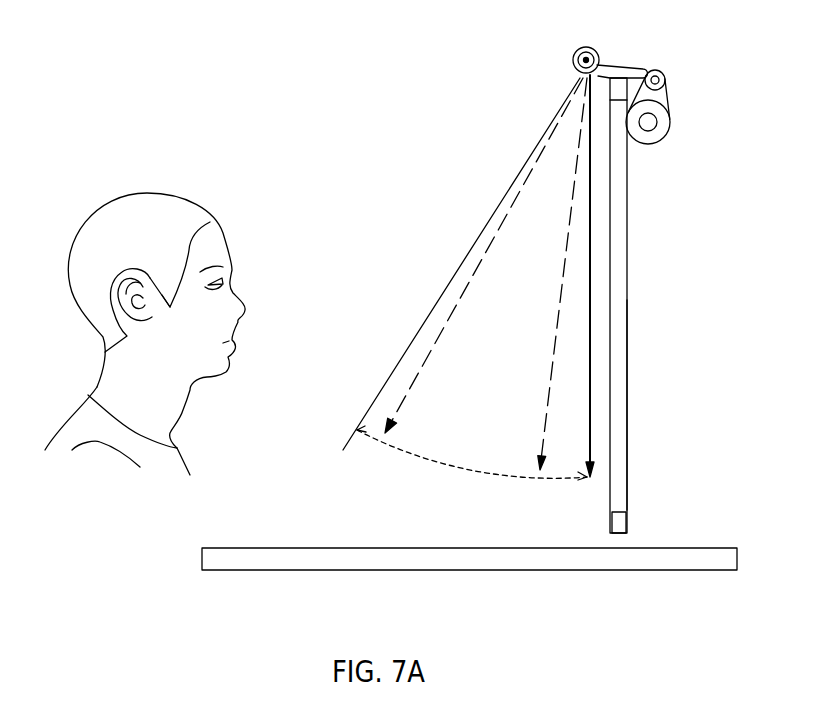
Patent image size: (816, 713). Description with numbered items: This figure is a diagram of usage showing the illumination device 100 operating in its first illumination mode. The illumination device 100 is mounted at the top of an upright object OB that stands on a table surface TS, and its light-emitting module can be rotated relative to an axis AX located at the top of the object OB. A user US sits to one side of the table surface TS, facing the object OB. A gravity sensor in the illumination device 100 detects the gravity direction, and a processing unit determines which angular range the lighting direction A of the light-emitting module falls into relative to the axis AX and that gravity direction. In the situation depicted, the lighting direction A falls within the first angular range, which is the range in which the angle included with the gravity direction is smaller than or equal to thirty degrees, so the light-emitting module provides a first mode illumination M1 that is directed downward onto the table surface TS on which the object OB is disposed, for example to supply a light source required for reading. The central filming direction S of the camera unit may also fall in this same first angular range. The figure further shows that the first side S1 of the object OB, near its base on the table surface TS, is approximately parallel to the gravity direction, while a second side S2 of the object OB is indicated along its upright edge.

The user US is at (120, 210).
The axis AX is at (588, 48).
The illumination device 100 is at (625, 72).
The object OB is at (618, 255).
The second side S2 is at (627, 430).
The first side S1 is at (610, 515).
The table surface TS is at (288, 558).
The first mode illumination M1 is at (461, 264).
The central filming direction S is at (484, 258).
The lighting direction A is at (551, 274).